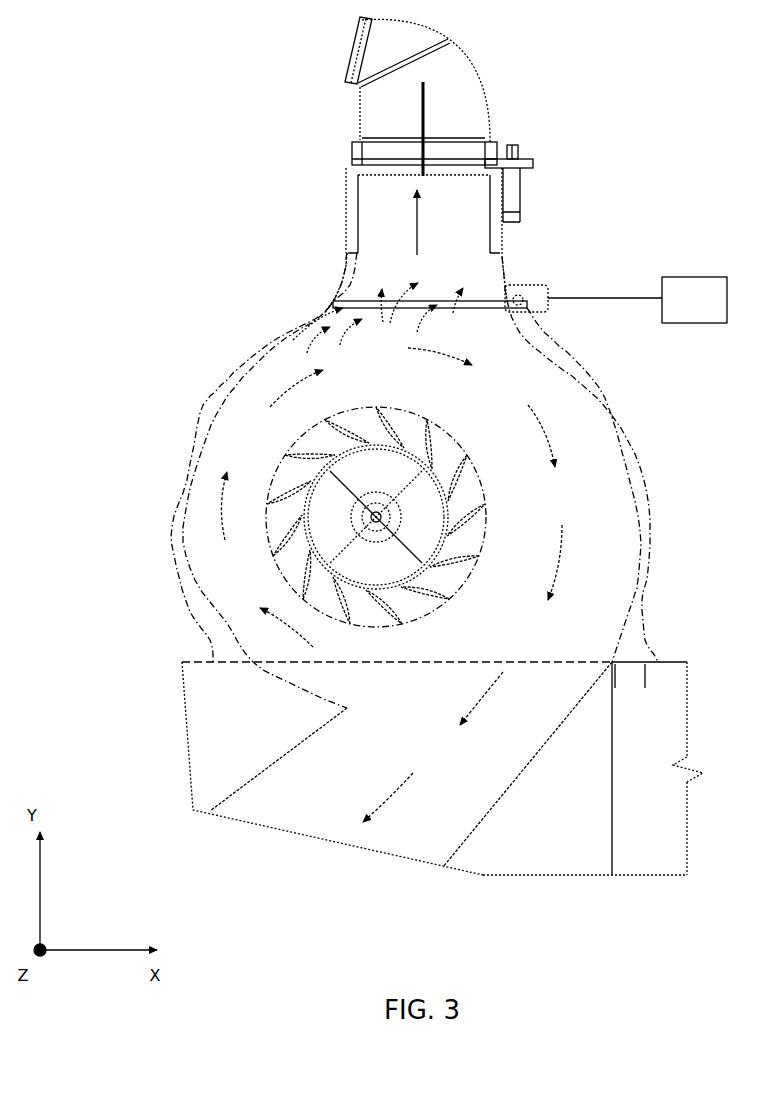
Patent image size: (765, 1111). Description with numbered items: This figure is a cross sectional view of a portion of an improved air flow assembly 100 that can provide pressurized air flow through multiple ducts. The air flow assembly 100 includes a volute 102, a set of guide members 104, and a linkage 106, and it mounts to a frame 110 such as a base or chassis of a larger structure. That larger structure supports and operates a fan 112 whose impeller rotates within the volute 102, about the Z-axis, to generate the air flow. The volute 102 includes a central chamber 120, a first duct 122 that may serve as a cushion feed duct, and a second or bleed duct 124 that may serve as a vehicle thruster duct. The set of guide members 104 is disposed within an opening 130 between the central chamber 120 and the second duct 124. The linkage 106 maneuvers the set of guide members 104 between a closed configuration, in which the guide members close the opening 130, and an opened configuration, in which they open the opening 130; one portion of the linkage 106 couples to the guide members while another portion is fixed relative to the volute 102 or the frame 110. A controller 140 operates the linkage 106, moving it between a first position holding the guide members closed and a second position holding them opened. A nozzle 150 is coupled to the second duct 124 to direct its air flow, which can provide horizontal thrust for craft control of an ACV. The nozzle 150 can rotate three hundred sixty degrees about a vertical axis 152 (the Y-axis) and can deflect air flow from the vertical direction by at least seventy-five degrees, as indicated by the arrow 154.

The air flow assembly 100 is at (540, 40).
The volute 102 is at (241, 320).
The set of guide members 104 is at (436, 252).
The linkage 106 is at (554, 306).
The frame 110 is at (188, 737).
The fan 112 is at (456, 418).
The central chamber 120 is at (173, 487).
The first duct 122 is at (298, 747).
The second duct 124 is at (340, 284).
The opening 130 is at (443, 331).
The controller 140 is at (681, 310).
The nozzle 150 is at (490, 110).
The vertical axis 152 is at (426, 97).
The arrow 154 is at (330, 47).